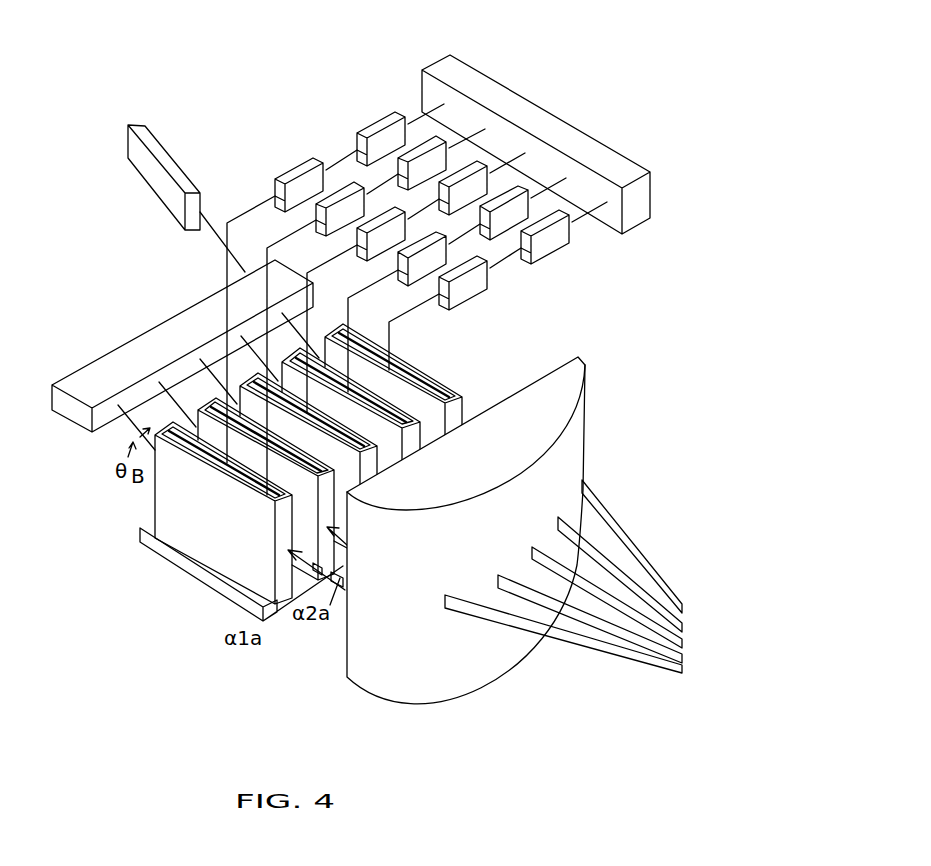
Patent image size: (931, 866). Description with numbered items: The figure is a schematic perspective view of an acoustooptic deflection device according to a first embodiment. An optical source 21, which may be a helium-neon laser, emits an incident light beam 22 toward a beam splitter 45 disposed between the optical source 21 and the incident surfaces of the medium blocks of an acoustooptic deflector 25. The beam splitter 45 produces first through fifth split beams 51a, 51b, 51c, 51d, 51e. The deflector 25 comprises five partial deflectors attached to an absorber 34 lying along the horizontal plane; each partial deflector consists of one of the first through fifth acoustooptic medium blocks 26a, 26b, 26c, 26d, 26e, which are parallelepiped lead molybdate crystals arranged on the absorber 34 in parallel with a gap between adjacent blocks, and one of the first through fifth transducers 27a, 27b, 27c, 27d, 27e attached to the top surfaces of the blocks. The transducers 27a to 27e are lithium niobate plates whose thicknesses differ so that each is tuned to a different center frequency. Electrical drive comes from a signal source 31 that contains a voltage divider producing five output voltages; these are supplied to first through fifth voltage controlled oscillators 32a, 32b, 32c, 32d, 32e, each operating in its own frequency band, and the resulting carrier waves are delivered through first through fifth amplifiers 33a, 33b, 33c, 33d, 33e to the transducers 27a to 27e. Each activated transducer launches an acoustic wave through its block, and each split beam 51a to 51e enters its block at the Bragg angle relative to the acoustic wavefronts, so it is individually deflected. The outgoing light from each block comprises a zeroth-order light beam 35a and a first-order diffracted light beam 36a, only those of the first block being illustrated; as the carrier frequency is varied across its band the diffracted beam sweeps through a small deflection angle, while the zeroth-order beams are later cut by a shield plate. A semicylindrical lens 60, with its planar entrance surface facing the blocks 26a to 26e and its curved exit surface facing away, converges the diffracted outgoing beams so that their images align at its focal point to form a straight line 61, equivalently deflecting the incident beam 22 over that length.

The optical source 21 is at (135, 168).
The incident light beam 22 is at (210, 230).
The signal source 31 is at (552, 117).
The first voltage controlled oscillator 32a is at (373, 128).
The second voltage controlled oscillator 32b is at (417, 143).
The third voltage controlled oscillator 32c is at (472, 170).
The fourth voltage controlled oscillator 32d is at (527, 193).
The fifth voltage controlled oscillator 32e is at (543, 233).
The first amplifier 33a is at (293, 177).
The second amplifier 33b is at (345, 193).
The third amplifier 33c is at (385, 213).
The fourth amplifier 33d is at (458, 257).
The fifth amplifier 33e is at (457, 277).
The beam splitter 45 is at (100, 362).
The acoustooptic deflector 25 is at (175, 688).
The first acoustooptic medium block 26a is at (163, 525).
The second acoustooptic medium block 26b is at (267, 467).
The third acoustooptic medium block 26c is at (317, 485).
The fourth acoustooptic medium block 26d is at (396, 392).
The fifth acoustooptic medium block 26e is at (450, 397).
The first transducer 27a is at (183, 442).
The second transducer 27b is at (263, 433).
The third transducer 27c is at (303, 477).
The fourth transducer 27d is at (372, 400).
The fifth transducer 27e is at (430, 388).
The first split beam 51a is at (122, 410).
The second split beam 51b is at (182, 412).
The third split beam 51c is at (220, 385).
The fourth split beam 51d is at (265, 362).
The fifth split beam 51e is at (305, 340).
The absorber 34 is at (322, 577).
The zeroth-order light beam 35a is at (342, 598).
The first-order diffracted light beam 36a is at (300, 598).
The semicylindrical lens 60 is at (447, 687).
The straight line 61 is at (683, 675).